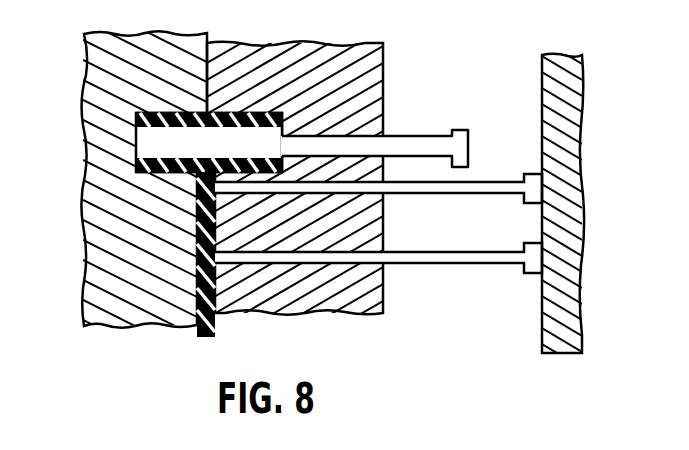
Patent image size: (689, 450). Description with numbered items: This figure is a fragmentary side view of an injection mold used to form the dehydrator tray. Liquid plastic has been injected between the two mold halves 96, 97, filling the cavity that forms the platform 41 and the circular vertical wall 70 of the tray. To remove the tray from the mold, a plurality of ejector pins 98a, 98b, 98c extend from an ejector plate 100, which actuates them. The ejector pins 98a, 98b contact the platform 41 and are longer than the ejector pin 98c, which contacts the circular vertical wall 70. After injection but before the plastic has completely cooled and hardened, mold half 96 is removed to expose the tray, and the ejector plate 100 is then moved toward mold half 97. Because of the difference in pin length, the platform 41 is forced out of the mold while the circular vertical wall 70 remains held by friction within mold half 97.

The mold half 96 is at (140, 38).
The mold half 97 is at (308, 48).
The circular vertical wall 70 is at (148, 112).
The platform 41 is at (194, 331).
The ejector pin 98a is at (448, 263).
The ejector pin 98b is at (505, 185).
The ejector pin 98c is at (428, 139).
The ejector plate 100 is at (572, 56).